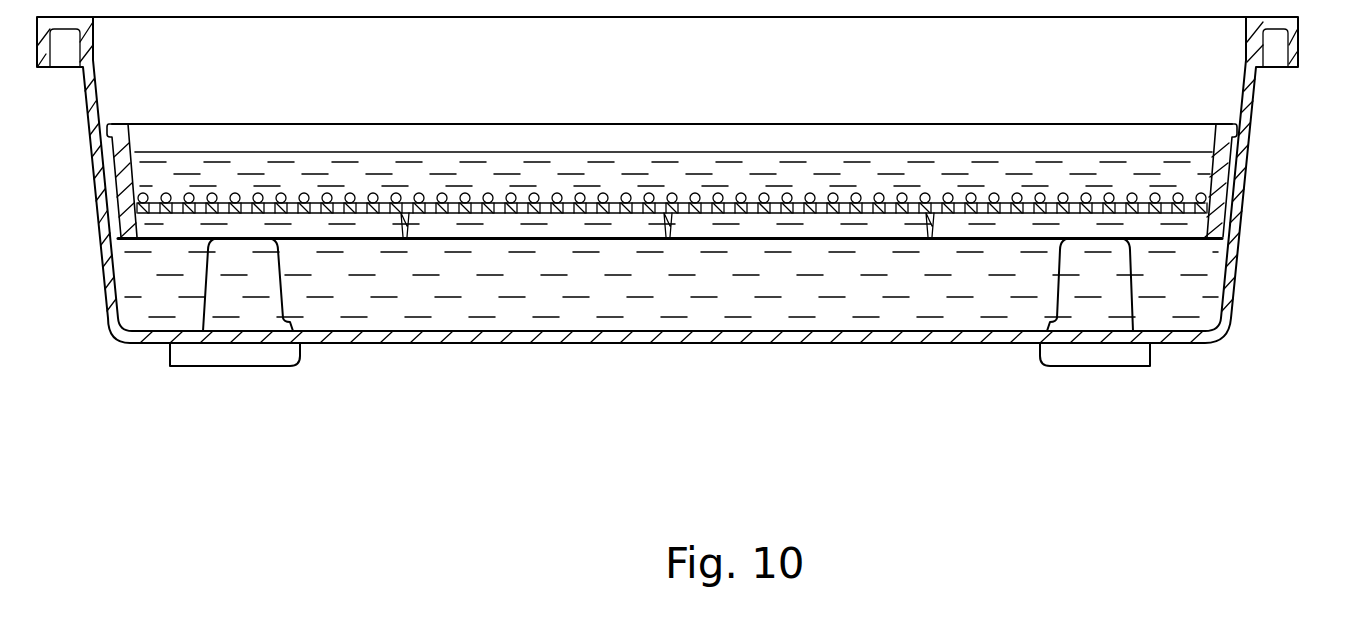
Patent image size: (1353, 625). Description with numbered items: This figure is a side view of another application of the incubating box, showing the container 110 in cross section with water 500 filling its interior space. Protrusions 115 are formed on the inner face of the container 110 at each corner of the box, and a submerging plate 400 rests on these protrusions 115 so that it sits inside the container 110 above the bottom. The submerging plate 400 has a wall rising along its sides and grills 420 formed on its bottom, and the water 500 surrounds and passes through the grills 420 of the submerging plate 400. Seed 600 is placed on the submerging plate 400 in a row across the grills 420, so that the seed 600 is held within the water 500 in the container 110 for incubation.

The container 110 is at (1263, 218).
The protrusions 115 is at (1122, 280).
The submerging plate 400 is at (1215, 101).
The grills 420 is at (783, 214).
The water 500 is at (910, 283).
The seed 600 is at (962, 194).